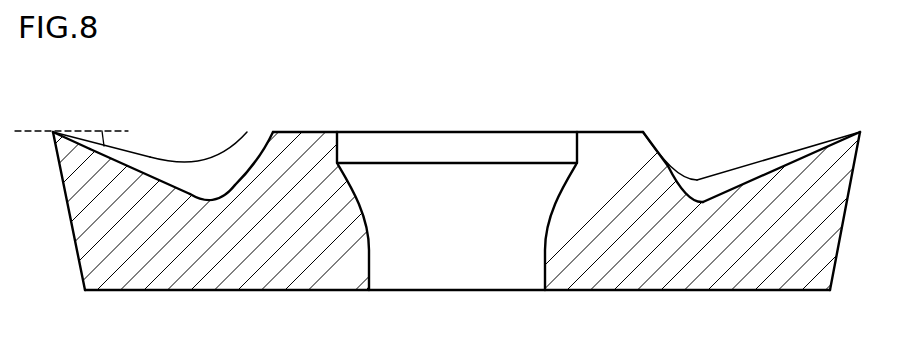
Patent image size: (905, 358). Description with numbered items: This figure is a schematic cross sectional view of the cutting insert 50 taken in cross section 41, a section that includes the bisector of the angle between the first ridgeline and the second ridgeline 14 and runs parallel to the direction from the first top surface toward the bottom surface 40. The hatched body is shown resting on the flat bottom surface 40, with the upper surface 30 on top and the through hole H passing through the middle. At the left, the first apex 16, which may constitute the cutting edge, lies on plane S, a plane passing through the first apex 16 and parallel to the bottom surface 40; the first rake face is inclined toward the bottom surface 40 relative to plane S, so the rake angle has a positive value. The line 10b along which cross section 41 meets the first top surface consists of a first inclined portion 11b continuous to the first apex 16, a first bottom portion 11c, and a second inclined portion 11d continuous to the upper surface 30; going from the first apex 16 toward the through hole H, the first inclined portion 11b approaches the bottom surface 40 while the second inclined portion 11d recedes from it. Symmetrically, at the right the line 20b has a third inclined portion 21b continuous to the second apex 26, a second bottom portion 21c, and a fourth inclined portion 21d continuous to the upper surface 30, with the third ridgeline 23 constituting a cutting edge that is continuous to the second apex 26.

The cutting insert 50 is at (823, 82).
The first apex 16 is at (53, 132).
The second ridgeline 14 is at (152, 180).
The line 10b is at (290, 81).
The first inclined portion 11b is at (157, 158).
The first bottom portion 11c is at (214, 202).
The second inclined portion 11d is at (266, 153).
The plane S is at (28, 133).
The upper surface 30 is at (308, 132).
The through hole H is at (342, 148).
The bottom surface 40 is at (305, 290).
The cross section 41 is at (205, 258).
The line 20b is at (785, 93).
The fourth inclined portion 21d is at (676, 174).
The second bottom portion 21c is at (697, 203).
The third inclined portion 21b is at (775, 160).
The third ridgeline 23 is at (781, 168).
The second apex 26 is at (861, 132).